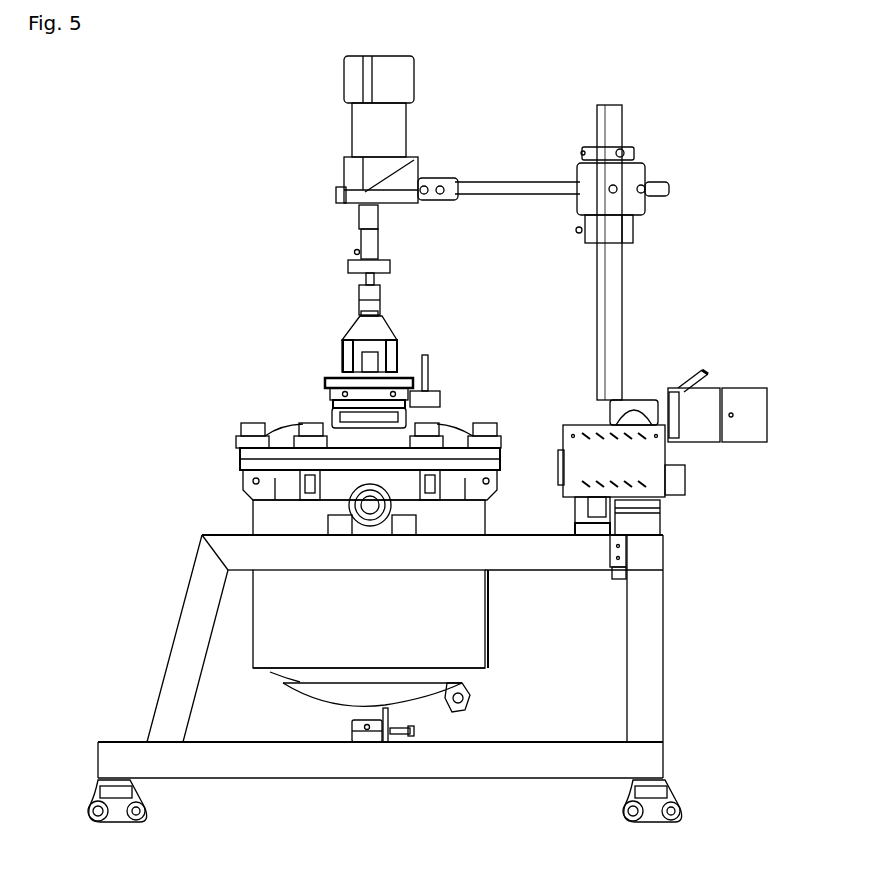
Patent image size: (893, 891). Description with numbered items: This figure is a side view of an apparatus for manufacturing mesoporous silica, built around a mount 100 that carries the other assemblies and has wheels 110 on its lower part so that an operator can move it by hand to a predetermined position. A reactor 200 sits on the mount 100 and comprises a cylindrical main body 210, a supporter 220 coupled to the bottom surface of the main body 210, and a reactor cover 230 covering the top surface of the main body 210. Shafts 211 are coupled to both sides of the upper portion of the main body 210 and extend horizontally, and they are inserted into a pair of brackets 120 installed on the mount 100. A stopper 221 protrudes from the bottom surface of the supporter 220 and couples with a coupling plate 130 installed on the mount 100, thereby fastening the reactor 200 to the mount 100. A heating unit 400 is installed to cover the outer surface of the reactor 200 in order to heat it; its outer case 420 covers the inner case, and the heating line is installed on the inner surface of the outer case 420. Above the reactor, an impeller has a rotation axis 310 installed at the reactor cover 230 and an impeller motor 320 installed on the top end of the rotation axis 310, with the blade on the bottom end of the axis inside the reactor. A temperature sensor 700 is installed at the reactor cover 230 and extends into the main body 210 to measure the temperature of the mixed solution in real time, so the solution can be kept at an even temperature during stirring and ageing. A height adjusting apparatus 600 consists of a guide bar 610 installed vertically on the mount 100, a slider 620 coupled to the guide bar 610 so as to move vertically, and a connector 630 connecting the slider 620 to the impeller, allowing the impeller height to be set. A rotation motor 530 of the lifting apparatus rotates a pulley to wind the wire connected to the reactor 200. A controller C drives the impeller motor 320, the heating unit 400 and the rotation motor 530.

The mount 100 is at (470, 765).
The wheel 110 is at (114, 824).
The brackets 120 is at (312, 506).
The coupling plate 130 is at (370, 745).
The reactor 200 is at (275, 688).
The main body 210 is at (305, 668).
The shafts 211 is at (480, 522).
The supporter 220 is at (330, 688).
The stopper 221 is at (386, 708).
The reactor cover 230 is at (302, 443).
The rotation axis 310 is at (366, 278).
The impeller motor 320 is at (350, 172).
The heating unit 400 is at (494, 633).
The outer case 420 is at (272, 620).
The rotation motor 530 is at (751, 395).
The height adjusting apparatus 600 is at (649, 245).
The guide bar 610 is at (623, 306).
The slider 620 is at (640, 170).
The connector 630 is at (509, 182).
The temperature sensor 700 is at (440, 396).
The controller C is at (667, 453).